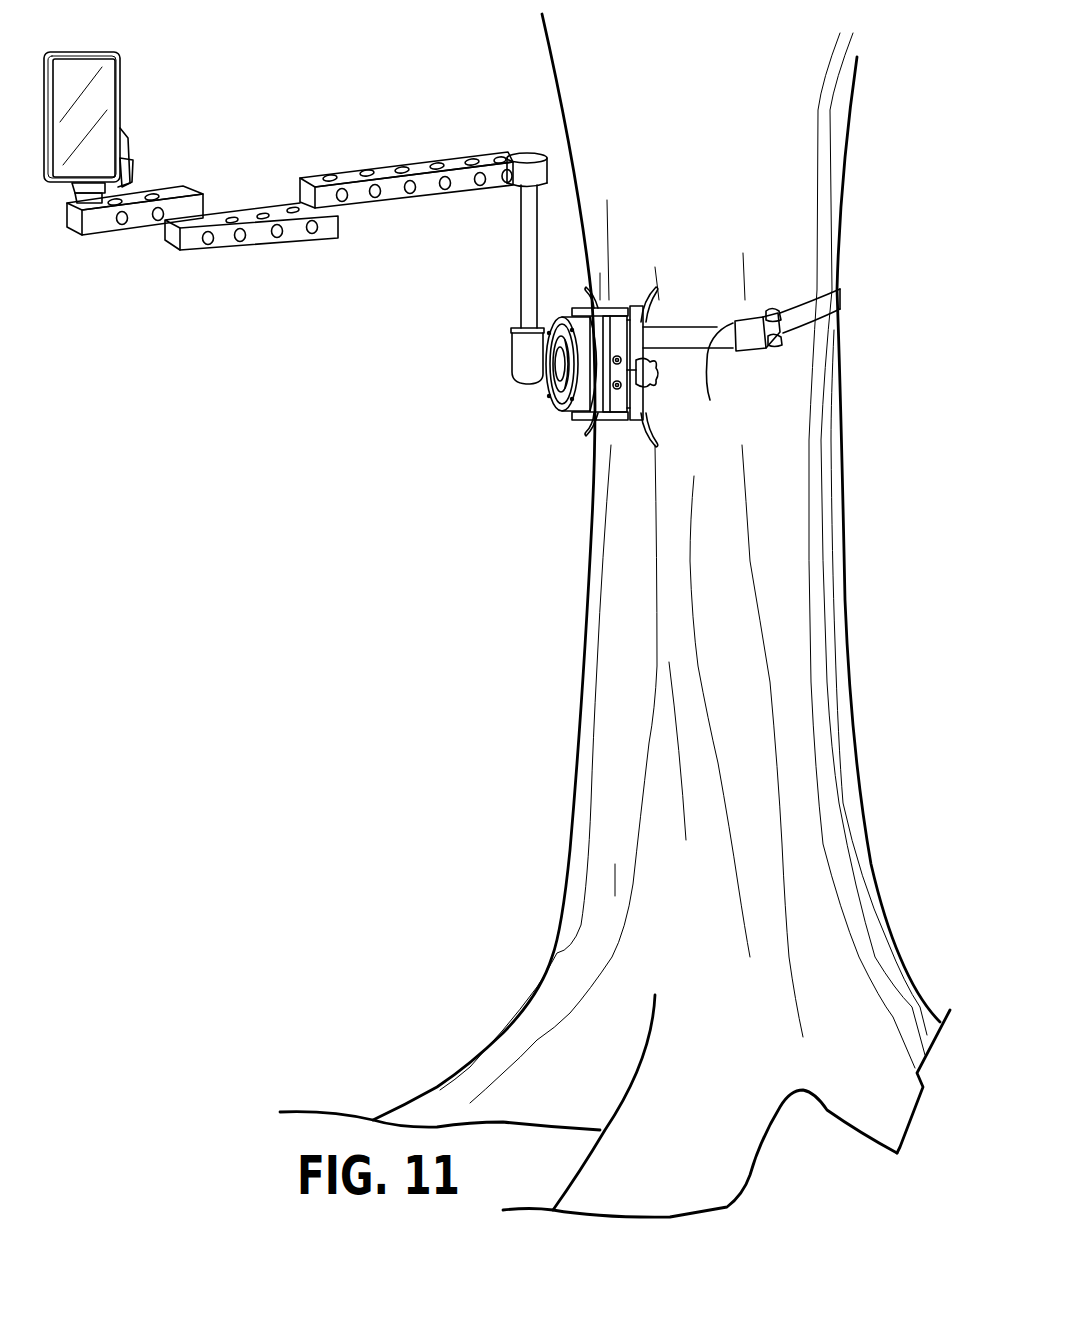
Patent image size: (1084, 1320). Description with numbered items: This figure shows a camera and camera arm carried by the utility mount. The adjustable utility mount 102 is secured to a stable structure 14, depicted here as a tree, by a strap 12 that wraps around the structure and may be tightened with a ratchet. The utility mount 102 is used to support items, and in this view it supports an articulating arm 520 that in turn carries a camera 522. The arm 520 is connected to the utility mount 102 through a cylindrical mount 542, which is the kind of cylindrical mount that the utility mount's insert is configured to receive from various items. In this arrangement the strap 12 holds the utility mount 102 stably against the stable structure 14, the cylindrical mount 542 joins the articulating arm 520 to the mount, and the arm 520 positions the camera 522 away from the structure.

The stable structure 14 is at (803, 230).
The strap 12 is at (827, 310).
The utility mount 102 is at (545, 405).
The cylindrical mount 542 is at (528, 268).
The articulating arm 520 is at (311, 243).
The camera 522 is at (102, 92).